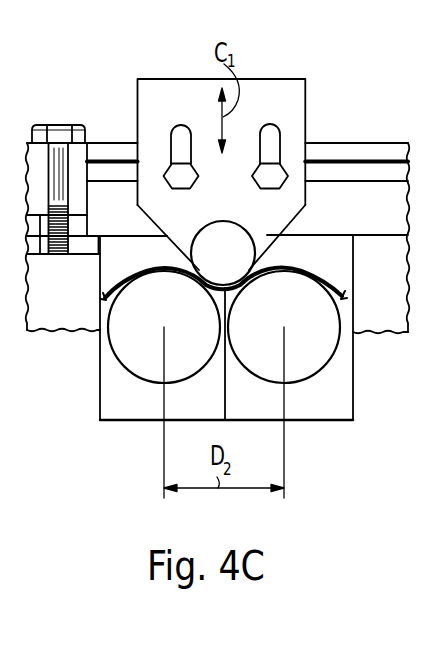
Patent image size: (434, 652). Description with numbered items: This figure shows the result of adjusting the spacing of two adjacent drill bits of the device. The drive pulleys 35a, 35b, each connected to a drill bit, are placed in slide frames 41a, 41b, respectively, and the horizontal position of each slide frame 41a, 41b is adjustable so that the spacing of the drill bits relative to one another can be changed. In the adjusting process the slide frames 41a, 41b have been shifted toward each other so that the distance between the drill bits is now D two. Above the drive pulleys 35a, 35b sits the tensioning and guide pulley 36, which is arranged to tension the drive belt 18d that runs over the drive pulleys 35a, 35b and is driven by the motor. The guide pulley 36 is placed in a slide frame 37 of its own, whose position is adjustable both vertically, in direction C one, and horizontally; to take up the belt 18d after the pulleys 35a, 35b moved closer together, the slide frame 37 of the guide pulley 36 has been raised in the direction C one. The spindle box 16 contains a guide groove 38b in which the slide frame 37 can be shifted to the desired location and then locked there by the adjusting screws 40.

The spindle box 16 is at (107, 148).
The guide groove 38b is at (352, 165).
The adjusting screws 40 is at (268, 167).
The slide frame 37 is at (157, 200).
The guide pulley 36 is at (235, 257).
The drive belt 18d is at (342, 293).
The drive pulley 35a is at (128, 340).
The drive pulley 35b is at (313, 350).
The slide frame 41a is at (118, 401).
The slide frame 41b is at (327, 400).